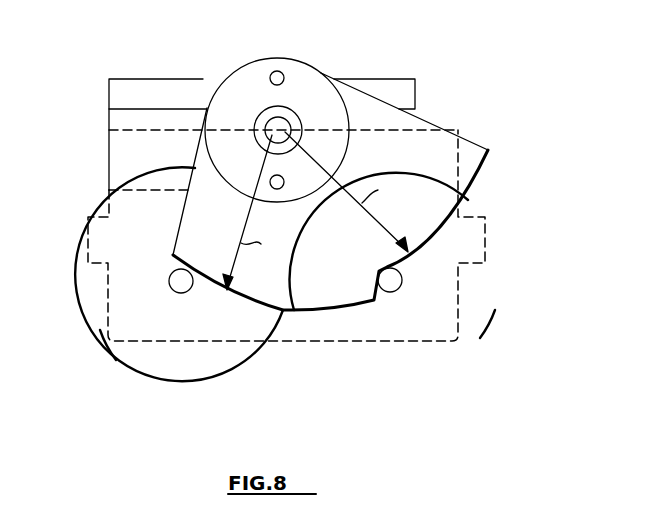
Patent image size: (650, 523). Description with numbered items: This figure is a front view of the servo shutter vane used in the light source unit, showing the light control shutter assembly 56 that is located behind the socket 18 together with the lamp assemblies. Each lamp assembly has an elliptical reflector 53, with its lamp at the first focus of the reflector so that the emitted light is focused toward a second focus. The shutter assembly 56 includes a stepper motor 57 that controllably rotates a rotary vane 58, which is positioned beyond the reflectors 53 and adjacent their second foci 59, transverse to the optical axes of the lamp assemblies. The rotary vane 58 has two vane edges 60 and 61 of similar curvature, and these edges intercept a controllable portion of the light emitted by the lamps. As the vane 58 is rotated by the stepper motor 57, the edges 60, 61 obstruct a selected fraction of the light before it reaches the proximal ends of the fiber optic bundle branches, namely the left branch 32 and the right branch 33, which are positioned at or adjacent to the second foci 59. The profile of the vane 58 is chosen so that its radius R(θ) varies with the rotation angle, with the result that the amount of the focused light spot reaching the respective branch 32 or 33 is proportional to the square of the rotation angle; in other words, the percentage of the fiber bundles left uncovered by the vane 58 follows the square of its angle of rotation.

The socket 18 is at (100, 212).
The left branch 32 is at (400, 297).
The right branch 33 is at (197, 328).
The elliptical reflector 53 is at (118, 358).
The light control shutter assembly 56 is at (304, 53).
The stepper motor 57 is at (148, 79).
The rotary vane 58 is at (368, 107).
The second foci 59 is at (172, 290).
The vane edge 60 is at (484, 170).
The vane edge 61 is at (290, 313).